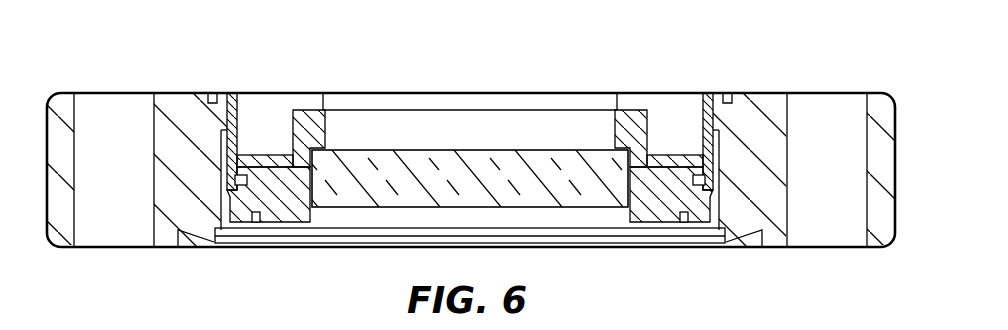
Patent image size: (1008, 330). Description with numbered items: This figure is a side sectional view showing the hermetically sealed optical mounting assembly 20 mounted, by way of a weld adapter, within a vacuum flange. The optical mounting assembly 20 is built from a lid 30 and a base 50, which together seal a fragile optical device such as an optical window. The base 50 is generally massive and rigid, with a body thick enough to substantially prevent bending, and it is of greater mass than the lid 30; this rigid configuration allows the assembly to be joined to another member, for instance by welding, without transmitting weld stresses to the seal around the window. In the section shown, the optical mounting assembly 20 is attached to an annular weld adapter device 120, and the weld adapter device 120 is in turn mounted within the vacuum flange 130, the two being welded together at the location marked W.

The optical mounting assembly 20 is at (471, 150).
The lid 30 is at (303, 112).
The base 50 is at (281, 212).
The annular weld adapter device 120 is at (236, 108).
The vacuum flange 130 is at (183, 112).
The weld W is at (712, 91).